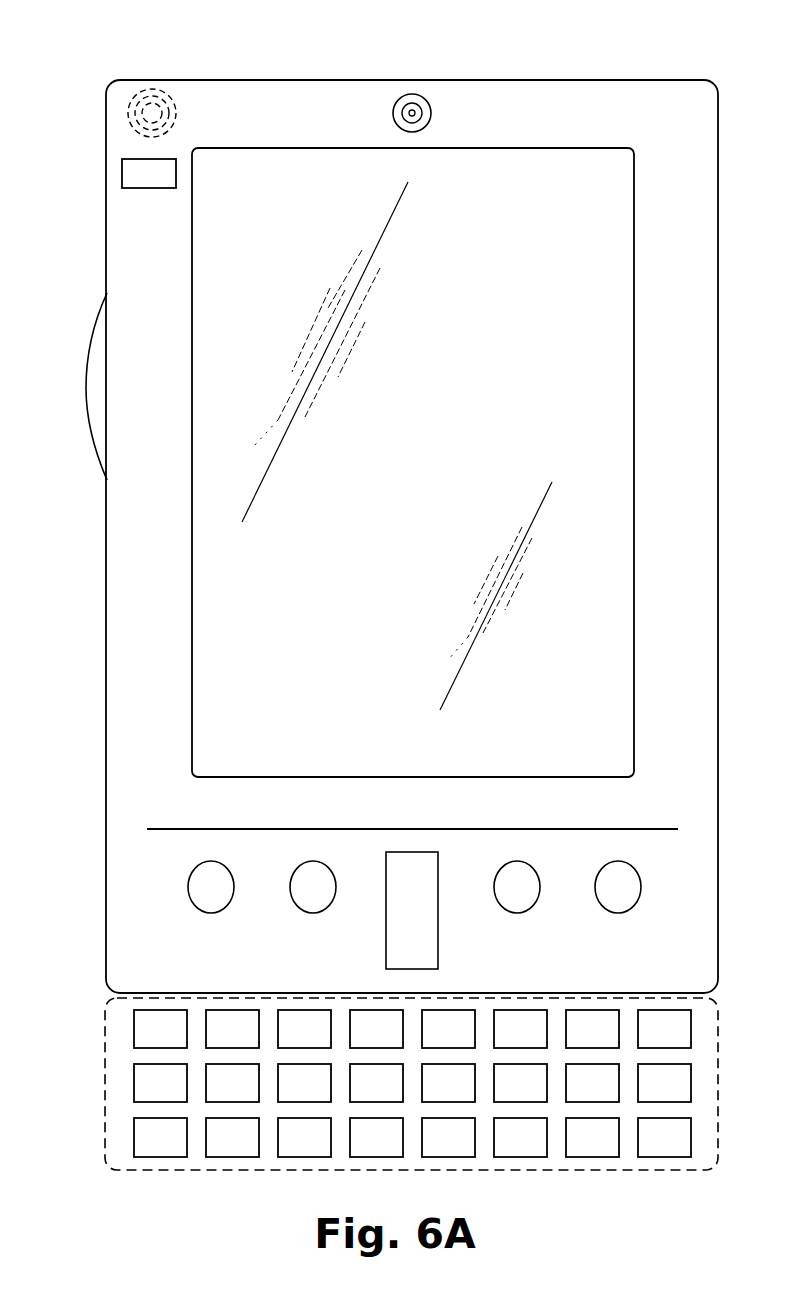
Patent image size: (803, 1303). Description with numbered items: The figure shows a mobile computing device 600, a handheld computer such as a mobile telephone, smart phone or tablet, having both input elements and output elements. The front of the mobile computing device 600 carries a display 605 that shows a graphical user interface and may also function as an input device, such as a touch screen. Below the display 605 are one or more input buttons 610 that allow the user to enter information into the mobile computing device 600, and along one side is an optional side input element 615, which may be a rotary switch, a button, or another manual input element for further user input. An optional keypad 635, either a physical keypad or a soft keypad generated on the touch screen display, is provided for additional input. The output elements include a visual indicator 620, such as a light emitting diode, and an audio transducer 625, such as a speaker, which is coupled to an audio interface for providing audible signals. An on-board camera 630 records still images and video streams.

The mobile computing device 600 is at (688, 80).
The display 605 is at (233, 624).
The input buttons 610 is at (211, 913).
The side input element 615 is at (86, 388).
The visual indicator 620 is at (122, 175).
The audio transducer 625 is at (125, 113).
The on-board camera 630 is at (412, 94).
The keypad 635 is at (115, 1082).